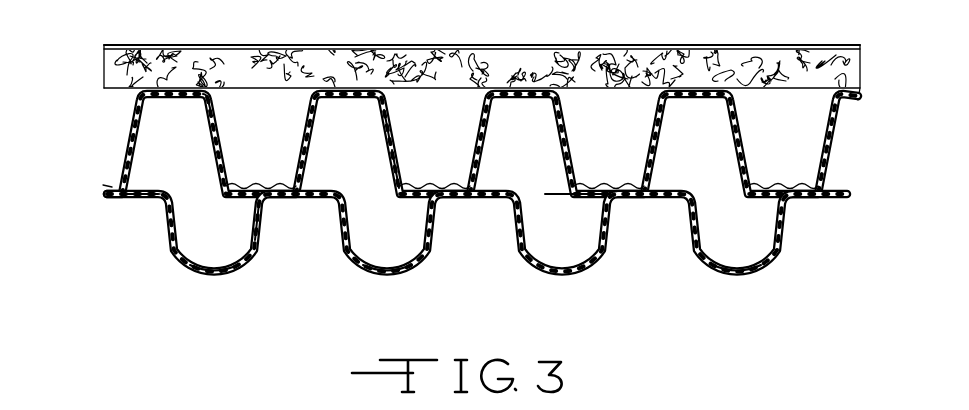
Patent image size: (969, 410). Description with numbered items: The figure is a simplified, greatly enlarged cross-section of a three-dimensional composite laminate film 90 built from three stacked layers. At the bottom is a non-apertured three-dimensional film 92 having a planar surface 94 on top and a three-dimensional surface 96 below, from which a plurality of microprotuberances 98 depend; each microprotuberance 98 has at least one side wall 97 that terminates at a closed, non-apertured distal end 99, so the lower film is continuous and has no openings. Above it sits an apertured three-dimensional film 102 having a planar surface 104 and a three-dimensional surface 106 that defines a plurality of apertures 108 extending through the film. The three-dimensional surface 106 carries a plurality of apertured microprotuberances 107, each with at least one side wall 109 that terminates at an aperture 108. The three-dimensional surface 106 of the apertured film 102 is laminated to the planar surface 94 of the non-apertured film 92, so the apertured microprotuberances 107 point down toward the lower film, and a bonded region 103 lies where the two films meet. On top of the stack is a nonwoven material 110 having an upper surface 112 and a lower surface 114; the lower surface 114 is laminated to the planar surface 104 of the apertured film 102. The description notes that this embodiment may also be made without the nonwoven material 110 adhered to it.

The three-dimensional composite laminate film 90 is at (100, 126).
The non-apertured three-dimensional film 92 is at (119, 212).
The planar surface 94 is at (143, 190).
The three-dimensional surface 96 is at (148, 199).
The side wall 97 is at (278, 217).
The microprotuberances 98 is at (210, 274).
The non-apertured distal end 99 is at (393, 275).
The apertured three-dimensional film 102 is at (118, 150).
The flange 103 is at (577, 194).
The planar surface 104 is at (106, 77).
The three-dimensional surface 106 is at (208, 117).
The apertured microprotuberances 107 is at (372, 142).
The apertures 108 is at (822, 126).
The side wall 109 is at (401, 154).
The nonwoven material 110 is at (341, 38).
The upper surface 112 is at (578, 46).
The lower surface 114 is at (598, 90).